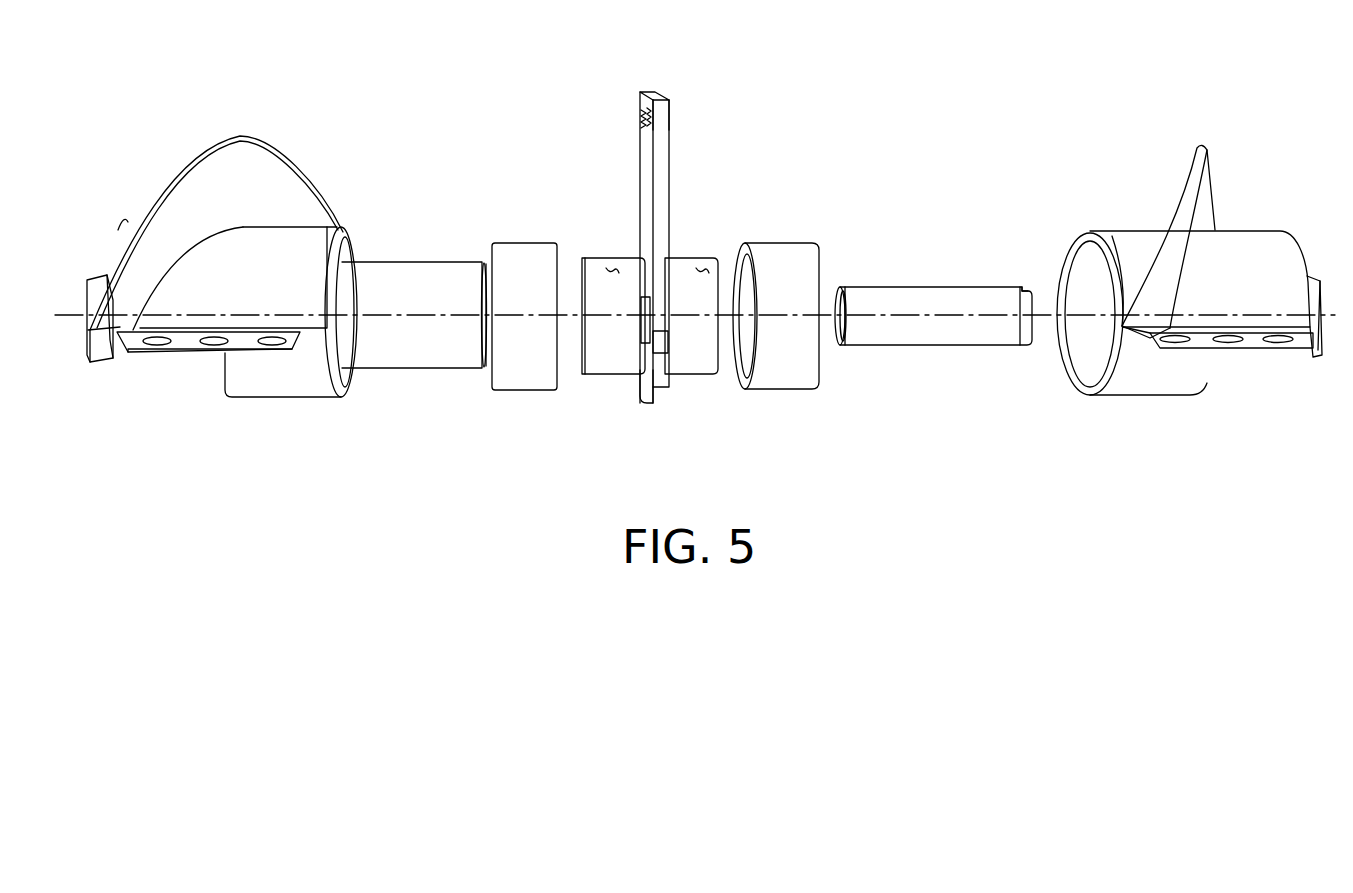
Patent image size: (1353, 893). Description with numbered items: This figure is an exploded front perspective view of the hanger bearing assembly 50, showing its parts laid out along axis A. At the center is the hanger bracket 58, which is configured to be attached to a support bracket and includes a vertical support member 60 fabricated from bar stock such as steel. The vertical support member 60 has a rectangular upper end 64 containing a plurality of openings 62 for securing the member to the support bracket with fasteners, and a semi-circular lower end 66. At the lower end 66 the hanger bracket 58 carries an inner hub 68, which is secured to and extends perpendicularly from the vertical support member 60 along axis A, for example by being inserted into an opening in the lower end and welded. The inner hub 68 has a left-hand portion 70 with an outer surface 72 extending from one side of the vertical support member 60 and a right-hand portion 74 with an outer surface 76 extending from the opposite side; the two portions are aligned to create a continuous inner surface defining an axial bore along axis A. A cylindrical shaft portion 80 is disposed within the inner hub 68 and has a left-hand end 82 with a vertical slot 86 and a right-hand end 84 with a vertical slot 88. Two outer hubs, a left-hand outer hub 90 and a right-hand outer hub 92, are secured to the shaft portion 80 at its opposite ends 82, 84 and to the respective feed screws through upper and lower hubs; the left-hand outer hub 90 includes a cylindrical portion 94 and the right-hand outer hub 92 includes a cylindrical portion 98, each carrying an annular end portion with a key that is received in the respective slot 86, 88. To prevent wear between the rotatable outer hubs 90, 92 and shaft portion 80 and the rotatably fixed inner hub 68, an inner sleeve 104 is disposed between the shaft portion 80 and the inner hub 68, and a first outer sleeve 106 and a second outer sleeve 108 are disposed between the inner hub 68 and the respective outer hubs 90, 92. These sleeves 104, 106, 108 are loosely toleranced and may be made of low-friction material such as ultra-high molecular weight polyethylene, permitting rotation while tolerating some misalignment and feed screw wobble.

The hanger bearing assembly 50 is at (884, 78).
The hanger bracket 58 is at (648, 269).
The vertical support member 60 is at (645, 183).
The openings 62 is at (644, 122).
The upper end 64 is at (663, 120).
The lower end 66 is at (653, 395).
The inner hub 68 is at (670, 275).
The left-hand portion 70 is at (595, 325).
The outer surface 72 is at (610, 266).
The right-hand portion 74 is at (725, 325).
The outer surface 76 is at (702, 268).
The cylindrical shaft portion 80 is at (931, 311).
The left-hand end 82 is at (871, 298).
The right-hand end 84 is at (990, 298).
The vertical slot 86 is at (833, 335).
The vertical slot 88 is at (1025, 290).
The left-hand outer hub 90 is at (244, 273).
The right-hand outer hub 92 is at (1198, 291).
The cylindrical portion 94 is at (295, 390).
The cylindrical portion 98 is at (1123, 380).
The inner sleeve 104 is at (398, 352).
The first outer sleeve 106 is at (522, 250).
The second outer sleeve 108 is at (776, 368).
The axis A is at (1328, 312).